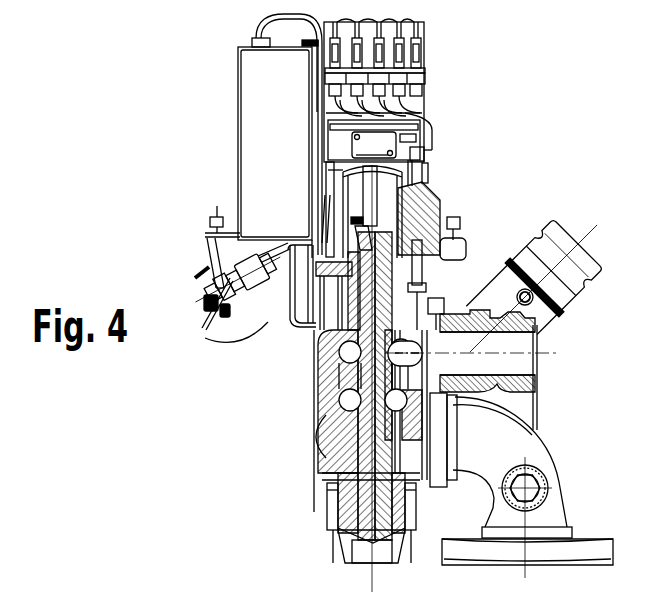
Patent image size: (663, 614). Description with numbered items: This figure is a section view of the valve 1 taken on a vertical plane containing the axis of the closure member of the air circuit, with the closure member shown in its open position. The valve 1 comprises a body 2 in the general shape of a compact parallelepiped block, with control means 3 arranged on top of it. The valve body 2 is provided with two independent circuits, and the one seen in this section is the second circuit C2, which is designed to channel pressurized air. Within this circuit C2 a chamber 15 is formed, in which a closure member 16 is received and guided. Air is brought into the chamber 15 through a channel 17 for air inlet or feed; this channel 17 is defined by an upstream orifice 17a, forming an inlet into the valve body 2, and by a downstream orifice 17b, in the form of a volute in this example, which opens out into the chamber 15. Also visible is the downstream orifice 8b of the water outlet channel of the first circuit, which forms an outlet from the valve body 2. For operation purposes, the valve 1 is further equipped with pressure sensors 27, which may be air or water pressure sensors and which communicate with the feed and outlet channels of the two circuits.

The valve 1 is at (488, 77).
The control means 3 is at (438, 72).
The downstream orifice 8b is at (574, 222).
The pressure sensors 27 is at (436, 196).
The closure member 16 is at (364, 300).
The body 2 is at (318, 374).
The second circuit C2 is at (348, 400).
The chamber 15 is at (350, 455).
The downstream orifice 17b is at (422, 355).
The upstream orifice 17a is at (540, 375).
The channel 17 is at (508, 378).